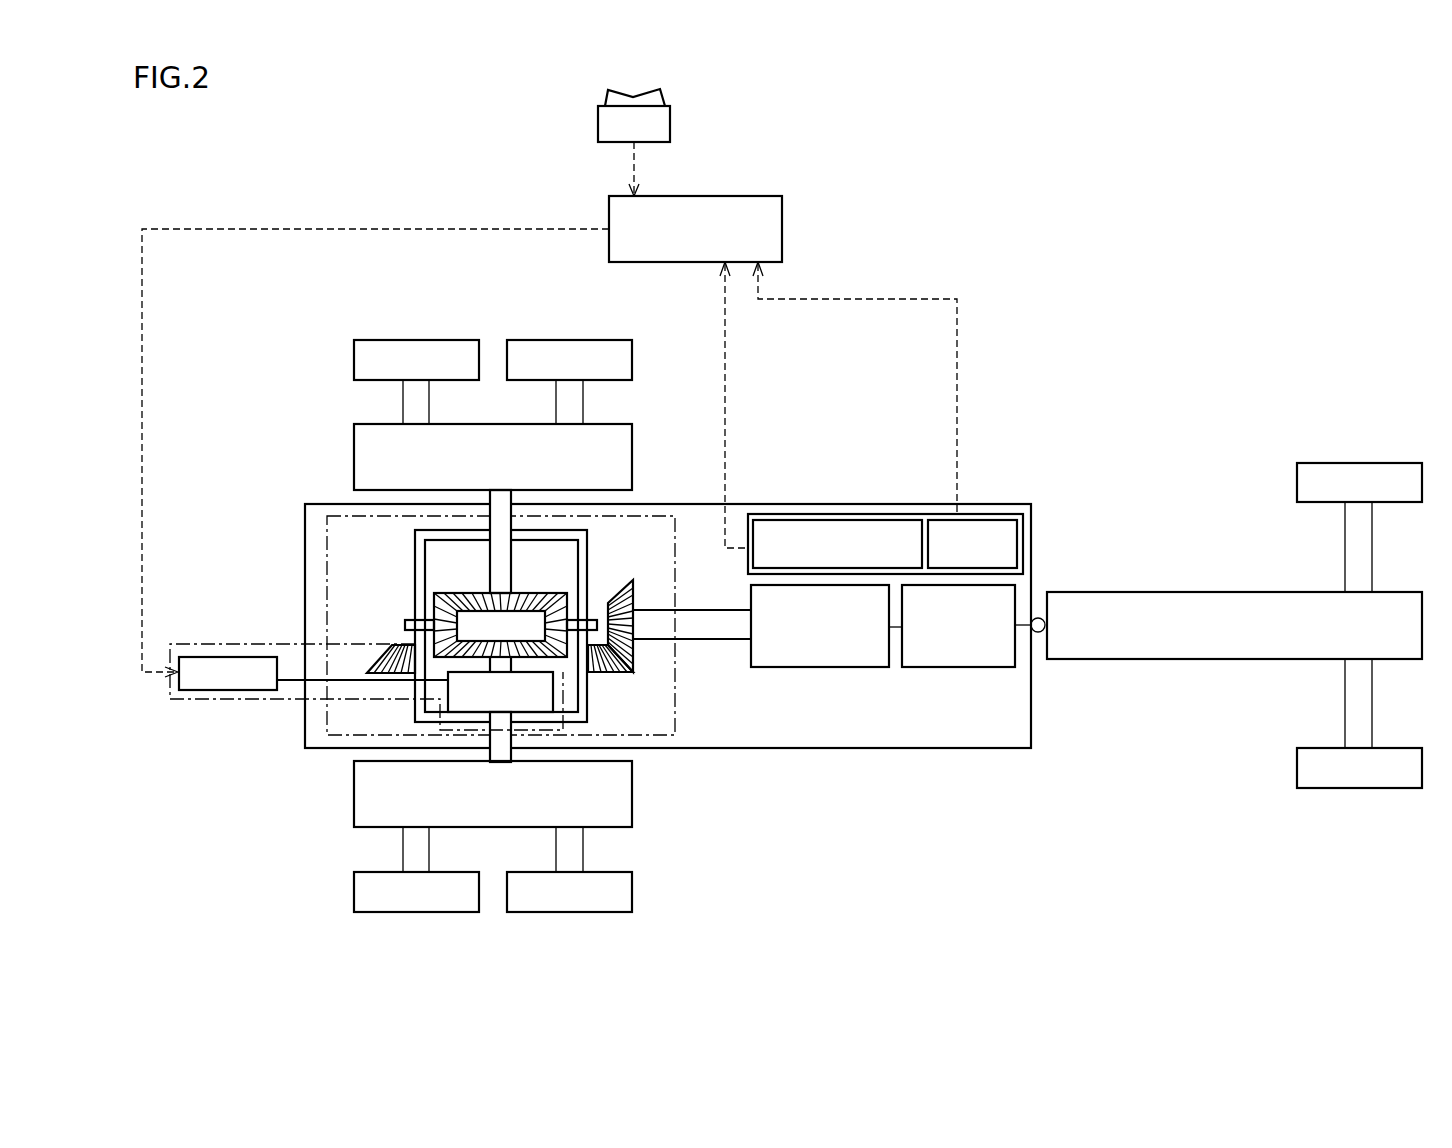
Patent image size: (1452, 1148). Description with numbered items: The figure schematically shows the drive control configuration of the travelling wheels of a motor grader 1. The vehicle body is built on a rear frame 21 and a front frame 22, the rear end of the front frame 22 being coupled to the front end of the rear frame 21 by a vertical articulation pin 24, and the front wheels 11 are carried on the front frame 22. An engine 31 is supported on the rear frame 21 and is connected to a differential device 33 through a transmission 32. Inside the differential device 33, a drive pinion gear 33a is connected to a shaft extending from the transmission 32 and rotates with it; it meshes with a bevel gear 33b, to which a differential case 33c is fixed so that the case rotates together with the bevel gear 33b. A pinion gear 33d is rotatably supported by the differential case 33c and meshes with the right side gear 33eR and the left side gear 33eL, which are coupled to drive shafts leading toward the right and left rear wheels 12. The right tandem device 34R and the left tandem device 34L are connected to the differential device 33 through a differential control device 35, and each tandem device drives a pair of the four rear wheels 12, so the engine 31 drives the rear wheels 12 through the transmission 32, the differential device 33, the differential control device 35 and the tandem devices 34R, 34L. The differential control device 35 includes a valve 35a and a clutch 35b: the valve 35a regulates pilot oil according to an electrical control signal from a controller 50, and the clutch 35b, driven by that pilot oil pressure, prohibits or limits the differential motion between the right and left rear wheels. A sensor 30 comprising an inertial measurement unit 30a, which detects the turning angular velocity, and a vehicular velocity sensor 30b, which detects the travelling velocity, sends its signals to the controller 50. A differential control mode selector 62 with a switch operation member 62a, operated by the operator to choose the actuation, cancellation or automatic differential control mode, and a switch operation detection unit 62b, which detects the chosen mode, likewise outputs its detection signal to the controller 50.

The motor grader 1 is at (1257, 126).
The front wheels 11 is at (1333, 463).
The rear wheels 12 is at (389, 340).
The rear frame 21 is at (955, 748).
The front frame 22 is at (1158, 659).
The vertical articulation pin 24 is at (1038, 633).
The sensor 30 is at (890, 519).
The inertial measurement unit 30a is at (938, 520).
The vehicular velocity sensor 30b is at (826, 520).
The engine 31 is at (960, 667).
The transmission 32 is at (810, 667).
The differential device 33 is at (539, 626).
The drive pinion gear 33a is at (640, 596).
The bevel gear 33b is at (600, 676).
The differential case 33c is at (582, 722).
The pinion gear 33d is at (578, 594).
The left side gear 33eL is at (558, 593).
The right side gear 33eR is at (557, 657).
The left tandem device 34L is at (354, 452).
The right tandem device 34R is at (354, 805).
The differential control device 35 is at (358, 695).
The valve 35a is at (258, 690).
The clutch 35b is at (448, 701).
The controller 50 is at (782, 220).
The differential control mode selector 62 is at (581, 131).
The switch operation member 62a is at (606, 94).
The switch operation detection unit 62b is at (598, 114).